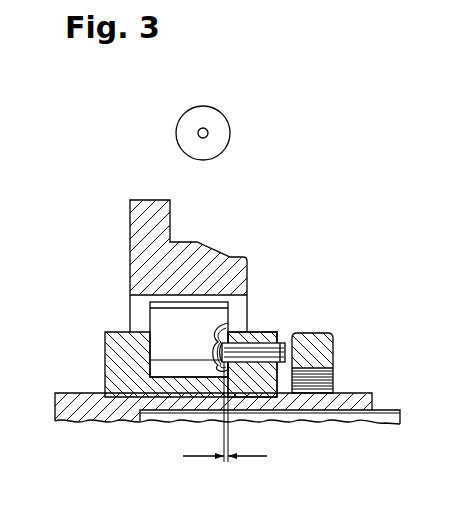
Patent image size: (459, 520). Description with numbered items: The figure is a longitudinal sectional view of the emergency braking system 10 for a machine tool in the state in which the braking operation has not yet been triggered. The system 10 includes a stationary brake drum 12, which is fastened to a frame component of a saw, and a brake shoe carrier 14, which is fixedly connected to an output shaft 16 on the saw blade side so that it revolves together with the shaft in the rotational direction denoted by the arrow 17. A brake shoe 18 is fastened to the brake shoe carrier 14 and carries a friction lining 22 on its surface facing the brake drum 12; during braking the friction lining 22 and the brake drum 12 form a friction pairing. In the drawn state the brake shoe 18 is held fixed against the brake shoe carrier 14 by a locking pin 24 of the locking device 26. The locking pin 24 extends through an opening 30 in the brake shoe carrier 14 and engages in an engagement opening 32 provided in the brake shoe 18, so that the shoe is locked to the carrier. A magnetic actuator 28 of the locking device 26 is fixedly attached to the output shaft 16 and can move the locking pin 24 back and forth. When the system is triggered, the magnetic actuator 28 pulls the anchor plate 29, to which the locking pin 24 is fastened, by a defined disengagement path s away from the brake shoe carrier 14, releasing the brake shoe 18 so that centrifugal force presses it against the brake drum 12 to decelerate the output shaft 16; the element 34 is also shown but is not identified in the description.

The emergency braking system 10 is at (312, 175).
The brake drum 12 is at (148, 218).
The brake shoe carrier 14 is at (123, 362).
The output shaft 16 is at (98, 402).
The arrow 17 is at (204, 125).
The brake shoe 18 is at (160, 320).
The friction lining 22 is at (177, 308).
The locking pin 24 is at (269, 345).
The locking device 26 is at (311, 306).
The magnetic actuator 28 is at (318, 350).
The anchor plate 29 is at (288, 331).
The opening 30 is at (264, 374).
The engagement opening 32 is at (176, 365).
The mounting plate 34 is at (351, 418).
The disengagement path s is at (183, 456).